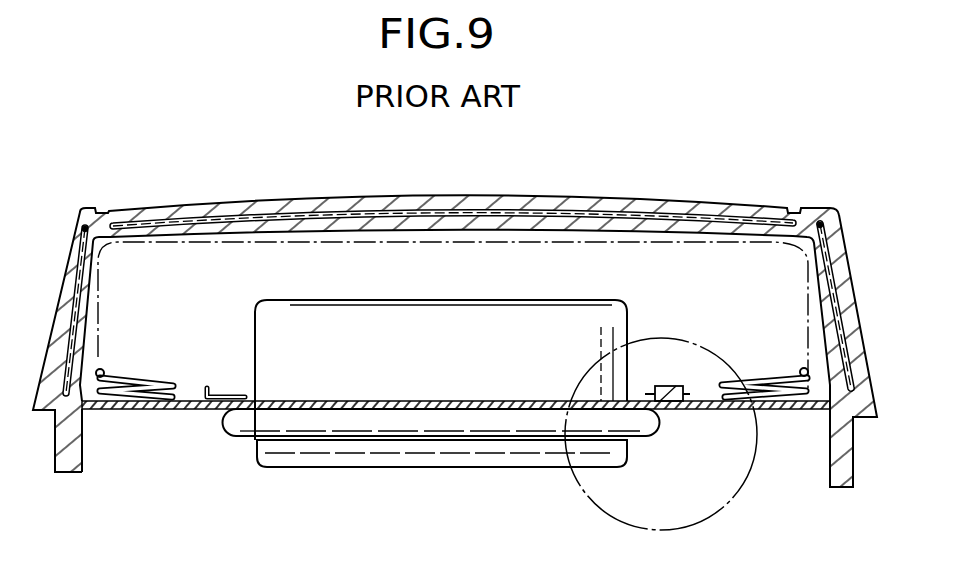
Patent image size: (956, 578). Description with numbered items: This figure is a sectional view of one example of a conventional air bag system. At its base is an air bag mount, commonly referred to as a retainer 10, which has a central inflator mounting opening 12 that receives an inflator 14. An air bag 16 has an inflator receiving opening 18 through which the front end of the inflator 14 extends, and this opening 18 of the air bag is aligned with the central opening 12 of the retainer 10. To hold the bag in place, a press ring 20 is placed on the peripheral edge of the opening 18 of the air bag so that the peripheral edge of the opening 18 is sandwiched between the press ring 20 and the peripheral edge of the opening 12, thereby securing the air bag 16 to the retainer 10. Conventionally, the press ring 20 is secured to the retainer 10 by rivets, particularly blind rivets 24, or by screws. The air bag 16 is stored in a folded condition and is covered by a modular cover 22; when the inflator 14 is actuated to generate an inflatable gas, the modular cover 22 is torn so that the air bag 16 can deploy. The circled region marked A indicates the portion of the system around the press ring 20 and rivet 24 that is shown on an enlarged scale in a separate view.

The retainer 10 is at (153, 412).
The inflator mounting opening 12 is at (252, 440).
The inflator 14 is at (437, 447).
The air bag 16 is at (290, 240).
The inflator receiving opening 18 is at (254, 383).
The press ring 20 is at (212, 386).
The modular cover 22 is at (672, 197).
The blind rivet 24 is at (660, 384).
The portion of the air bag system A is at (588, 505).